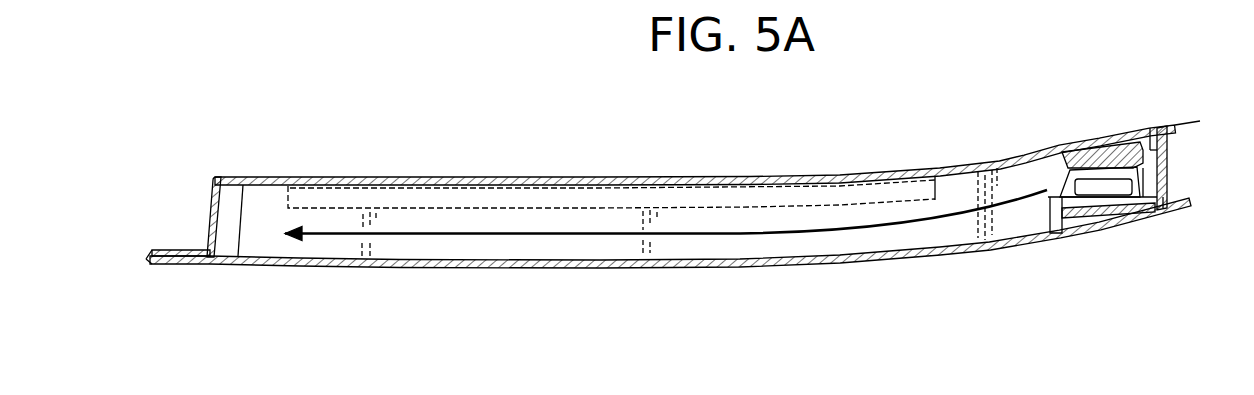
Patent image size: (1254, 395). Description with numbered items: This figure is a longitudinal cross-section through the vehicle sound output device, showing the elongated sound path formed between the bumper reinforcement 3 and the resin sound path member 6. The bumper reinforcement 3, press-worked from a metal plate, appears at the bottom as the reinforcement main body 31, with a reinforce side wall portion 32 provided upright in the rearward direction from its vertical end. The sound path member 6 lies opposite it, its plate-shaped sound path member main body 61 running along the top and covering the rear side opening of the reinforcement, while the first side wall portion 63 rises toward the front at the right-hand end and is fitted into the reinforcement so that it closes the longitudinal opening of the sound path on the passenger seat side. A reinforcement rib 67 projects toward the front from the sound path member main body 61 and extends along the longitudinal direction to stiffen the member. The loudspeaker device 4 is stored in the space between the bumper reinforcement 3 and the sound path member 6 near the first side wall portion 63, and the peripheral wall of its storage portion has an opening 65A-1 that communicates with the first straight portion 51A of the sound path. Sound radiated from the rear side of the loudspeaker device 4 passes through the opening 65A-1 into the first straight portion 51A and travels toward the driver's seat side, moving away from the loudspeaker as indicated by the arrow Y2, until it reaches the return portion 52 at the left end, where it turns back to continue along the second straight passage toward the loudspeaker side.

The bumper reinforcement 3 is at (668, 275).
The loudspeaker device 4 is at (1107, 152).
The sound path member 6 is at (703, 176).
The reinforcement main body 31 is at (518, 268).
The reinforce side wall portion 32 is at (395, 267).
The first straight portion 51A is at (956, 207).
The return portion 52 is at (229, 205).
The sound path member main body 61 is at (799, 177).
The first side wall portion 63 is at (1167, 150).
The opening 65A-1 is at (1048, 183).
The reinforcement rib 67 is at (547, 210).
The arrow Y2 is at (716, 231).